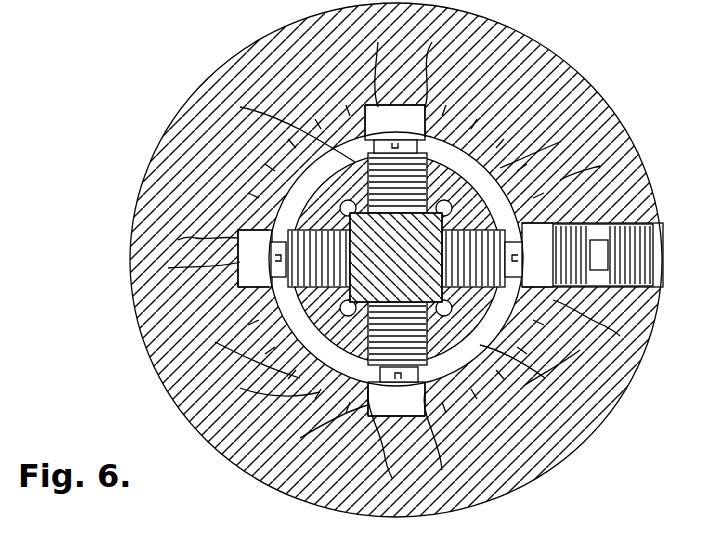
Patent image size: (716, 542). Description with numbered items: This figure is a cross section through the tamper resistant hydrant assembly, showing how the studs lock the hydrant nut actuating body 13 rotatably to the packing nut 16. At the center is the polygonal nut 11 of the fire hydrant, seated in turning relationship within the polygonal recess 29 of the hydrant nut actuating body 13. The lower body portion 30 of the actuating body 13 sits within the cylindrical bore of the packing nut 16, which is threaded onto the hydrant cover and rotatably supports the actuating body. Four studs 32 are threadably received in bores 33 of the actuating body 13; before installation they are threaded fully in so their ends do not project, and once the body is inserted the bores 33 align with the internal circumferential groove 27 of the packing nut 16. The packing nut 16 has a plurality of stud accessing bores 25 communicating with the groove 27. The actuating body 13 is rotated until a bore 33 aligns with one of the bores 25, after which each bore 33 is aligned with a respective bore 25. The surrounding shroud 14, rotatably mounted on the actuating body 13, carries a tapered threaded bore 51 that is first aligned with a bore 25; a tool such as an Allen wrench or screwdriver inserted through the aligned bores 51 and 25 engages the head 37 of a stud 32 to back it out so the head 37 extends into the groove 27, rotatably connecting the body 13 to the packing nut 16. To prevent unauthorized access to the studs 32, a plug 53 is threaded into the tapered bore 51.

The polygonal nut 11 is at (404, 245).
The hydrant nut actuating body 13 is at (277, 207).
The shroud 14 is at (168, 128).
The packing nut 16 is at (560, 142).
The bores 25 is at (386, 260).
The internal circumferential groove 27 is at (545, 378).
The polygonal recess 29 is at (358, 293).
The lower body portion 30 is at (240, 388).
The studs 32 is at (386, 278).
The bores 33 is at (393, 255).
The head 37 is at (380, 253).
The tapered threaded bore 51 is at (653, 316).
The plug 53 is at (657, 208).